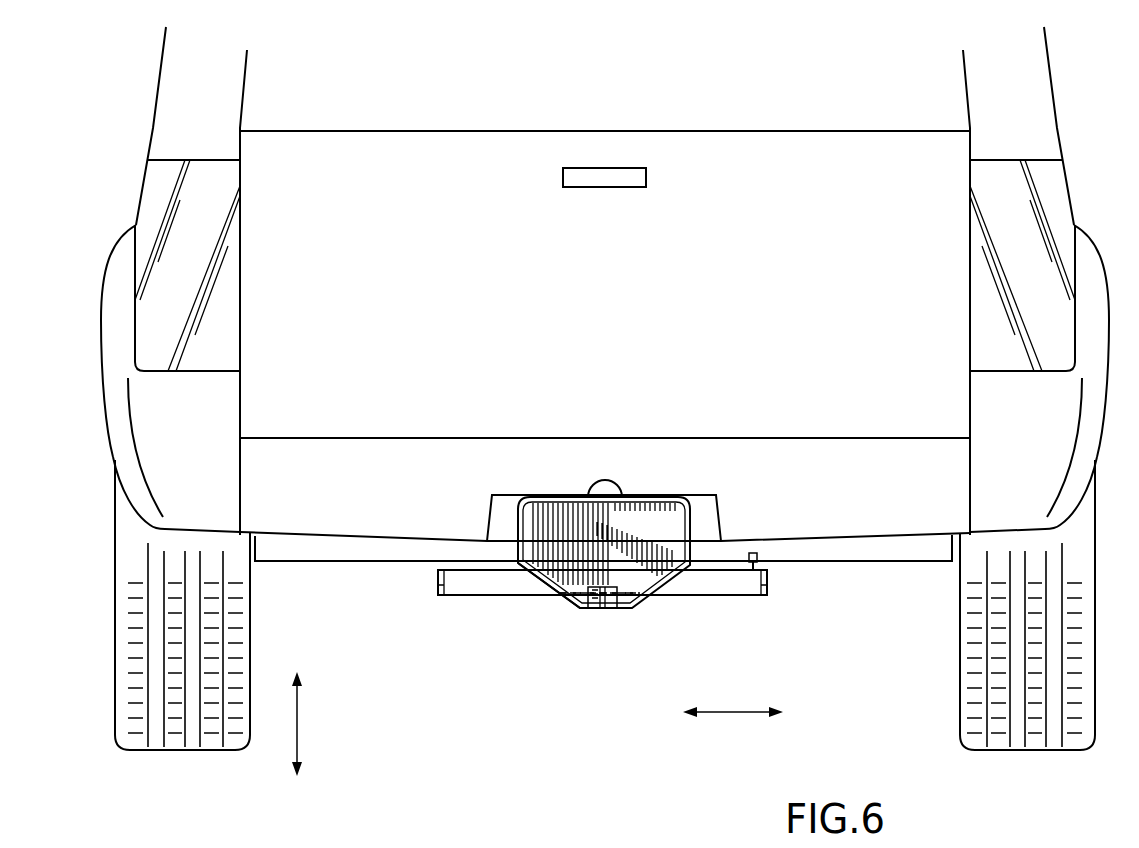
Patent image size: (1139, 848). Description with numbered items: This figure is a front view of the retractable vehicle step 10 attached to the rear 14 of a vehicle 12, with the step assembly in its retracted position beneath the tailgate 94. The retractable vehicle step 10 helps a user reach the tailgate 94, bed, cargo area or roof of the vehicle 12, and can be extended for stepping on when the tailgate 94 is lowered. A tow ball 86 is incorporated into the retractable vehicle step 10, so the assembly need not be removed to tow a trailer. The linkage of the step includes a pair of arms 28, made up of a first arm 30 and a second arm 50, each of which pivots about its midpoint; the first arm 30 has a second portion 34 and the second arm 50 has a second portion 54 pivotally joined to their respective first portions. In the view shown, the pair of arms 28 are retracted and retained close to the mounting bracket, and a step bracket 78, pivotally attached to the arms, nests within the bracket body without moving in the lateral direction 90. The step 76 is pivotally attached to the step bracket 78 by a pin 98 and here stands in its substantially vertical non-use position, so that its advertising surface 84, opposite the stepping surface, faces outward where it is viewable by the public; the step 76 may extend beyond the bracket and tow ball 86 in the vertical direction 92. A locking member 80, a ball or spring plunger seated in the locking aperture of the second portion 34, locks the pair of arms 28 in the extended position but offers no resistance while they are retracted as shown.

The retractable vehicle step 10 is at (748, 475).
The vehicle 12 is at (1032, 100).
The rear 14 is at (296, 487).
The pair of arms 28 is at (538, 621).
The first arm 30 is at (798, 590).
The second portion 34 is at (713, 590).
The second arm 50 is at (402, 592).
The second portion 54 is at (493, 590).
The step 76 is at (566, 515).
The step bracket 78 is at (612, 608).
The locking member 80 is at (752, 553).
The advertising surface 84 is at (549, 546).
The tow ball 86 is at (606, 488).
The lateral direction 90 is at (733, 713).
The vertical direction 92 is at (297, 727).
The tailgate 94 is at (775, 145).
The pin 98 is at (577, 607).